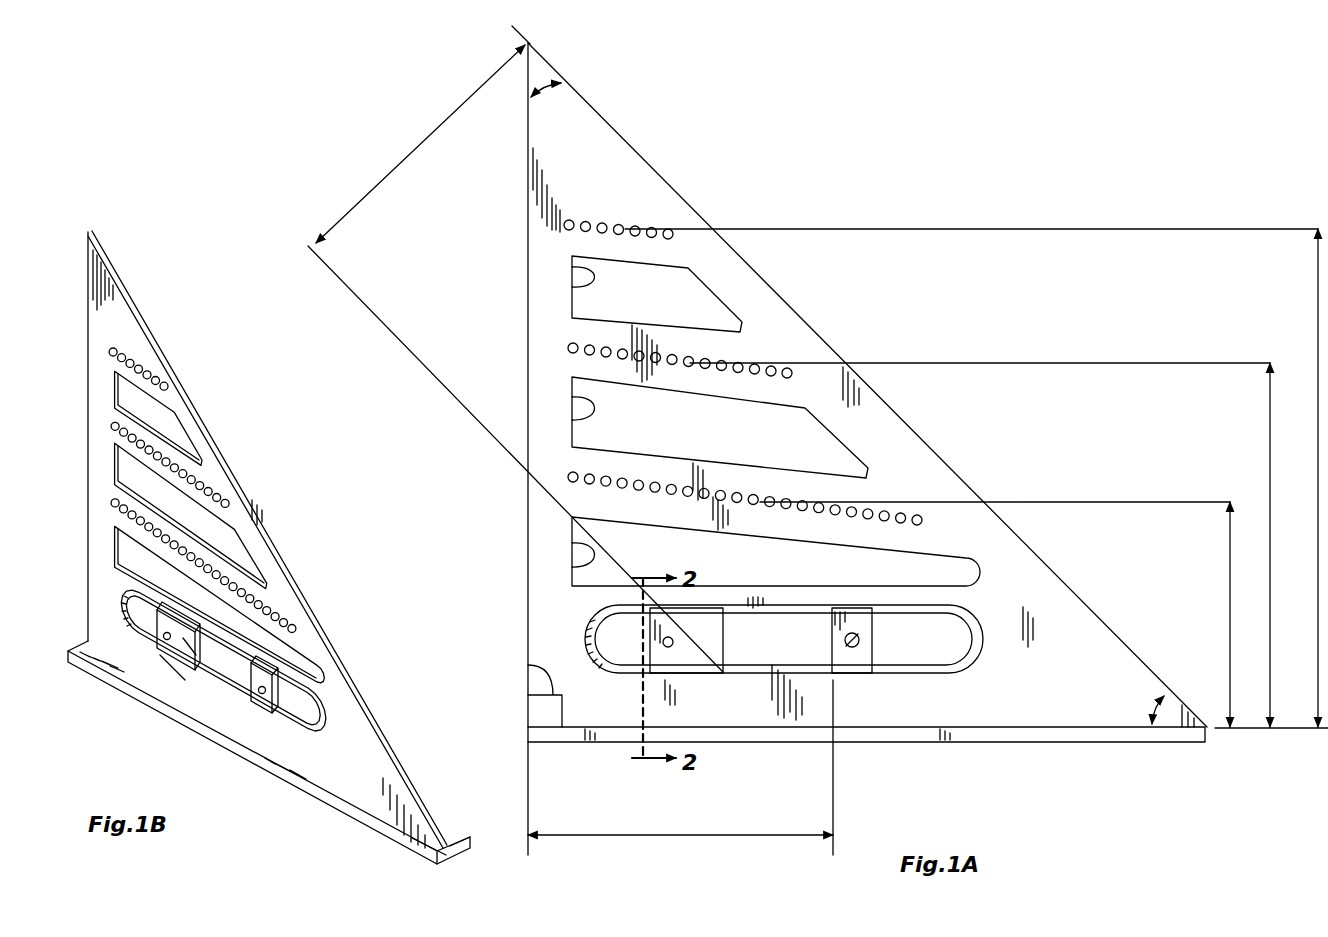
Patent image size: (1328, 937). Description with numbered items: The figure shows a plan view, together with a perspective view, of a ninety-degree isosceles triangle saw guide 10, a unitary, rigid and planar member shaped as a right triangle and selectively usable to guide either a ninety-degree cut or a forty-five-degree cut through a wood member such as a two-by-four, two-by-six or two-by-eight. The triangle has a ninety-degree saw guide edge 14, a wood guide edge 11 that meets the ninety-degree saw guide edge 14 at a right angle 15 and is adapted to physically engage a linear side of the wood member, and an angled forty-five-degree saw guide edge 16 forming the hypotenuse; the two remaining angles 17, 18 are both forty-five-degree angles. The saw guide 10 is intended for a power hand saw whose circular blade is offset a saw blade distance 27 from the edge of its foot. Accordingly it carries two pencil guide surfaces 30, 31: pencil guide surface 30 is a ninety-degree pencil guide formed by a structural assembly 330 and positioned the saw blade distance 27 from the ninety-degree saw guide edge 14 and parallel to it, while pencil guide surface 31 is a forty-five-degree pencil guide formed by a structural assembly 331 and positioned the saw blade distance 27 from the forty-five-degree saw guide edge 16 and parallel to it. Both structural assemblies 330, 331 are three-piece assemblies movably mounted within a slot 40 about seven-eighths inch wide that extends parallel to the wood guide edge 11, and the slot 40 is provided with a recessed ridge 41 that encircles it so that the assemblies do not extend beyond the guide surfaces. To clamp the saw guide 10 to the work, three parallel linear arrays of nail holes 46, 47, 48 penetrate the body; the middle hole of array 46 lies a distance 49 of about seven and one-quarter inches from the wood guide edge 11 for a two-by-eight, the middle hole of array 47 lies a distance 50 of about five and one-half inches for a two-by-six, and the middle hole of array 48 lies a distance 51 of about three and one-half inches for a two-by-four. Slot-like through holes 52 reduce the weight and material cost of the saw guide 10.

In FIG. 1A, the saw guide 10 is at (1000, 134).
In FIG. 1B, the saw guide 10 is at (168, 266).
In FIG. 1A, the wood guide edge 11 is at (741, 732).
In FIG. 1B, the wood guide edge 11 is at (123, 677).
In FIG. 1A, the 90-degree saw guide edge 14 is at (528, 504).
In FIG. 1B, the 90-degree saw guide edge 14 is at (85, 268).
In FIG. 1A, the right angle 15 is at (532, 667).
In FIG. 1A, the 45-degree saw guide edge 16 is at (958, 474).
In FIG. 1B, the 45-degree saw guide edge 16 is at (212, 428).
In FIG. 1A, the angle 17 is at (544, 98).
In FIG. 1A, the angle 18 is at (1150, 715).
In FIG. 1A, the saw blade distance 27 is at (636, 838).
In FIG. 1A, the pencil guide surface 30 is at (875, 640).
In FIG. 1A, the pencil guide surface 31 is at (697, 640).
In FIG. 1A, the slot 40 is at (920, 662).
In FIG. 1B, the slot 40 is at (307, 714).
In FIG. 1A, the recessed ridge 41 is at (982, 656).
In FIG. 1A, the array of nail holes 46 is at (625, 226).
In FIG. 1B, the array of nail holes 46 is at (143, 372).
In FIG. 1A, the array of nail holes 47 is at (692, 362).
In FIG. 1B, the array of nail holes 47 is at (197, 487).
In FIG. 1A, the array of nail holes 48 is at (758, 494).
In FIG. 1B, the array of nail holes 48 is at (263, 607).
In FIG. 1A, the distance 49 is at (1318, 378).
In FIG. 1A, the distance 50 is at (1268, 495).
In FIG. 1A, the distance 51 is at (1228, 600).
In FIG. 1A, the slot-like through holes 52 is at (585, 276).
In FIG. 1B, the structural assembly 330 is at (267, 702).
In FIG. 1B, the structural assembly 331 is at (197, 672).